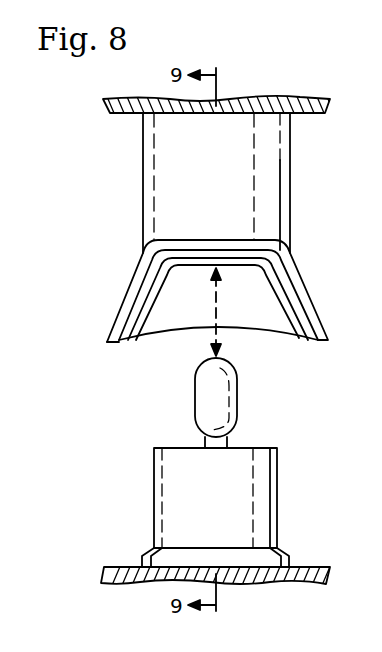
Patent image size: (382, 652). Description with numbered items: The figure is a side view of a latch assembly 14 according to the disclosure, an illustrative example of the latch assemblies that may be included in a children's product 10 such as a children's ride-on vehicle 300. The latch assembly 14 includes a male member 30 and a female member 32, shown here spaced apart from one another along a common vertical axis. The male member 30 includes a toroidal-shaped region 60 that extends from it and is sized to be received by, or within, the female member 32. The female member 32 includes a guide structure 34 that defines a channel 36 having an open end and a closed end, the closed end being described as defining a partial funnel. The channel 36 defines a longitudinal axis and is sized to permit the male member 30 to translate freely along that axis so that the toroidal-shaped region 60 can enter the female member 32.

The children's product 10 is at (63, 137).
The children's ride-on vehicle 300 is at (71, 191).
The latch assembly 14 is at (116, 199).
The female member 32 is at (291, 186).
The guide structure 34 is at (120, 302).
The channel 36 is at (252, 337).
The toroidal-shaped region 60 is at (238, 402).
The male member 30 is at (154, 497).